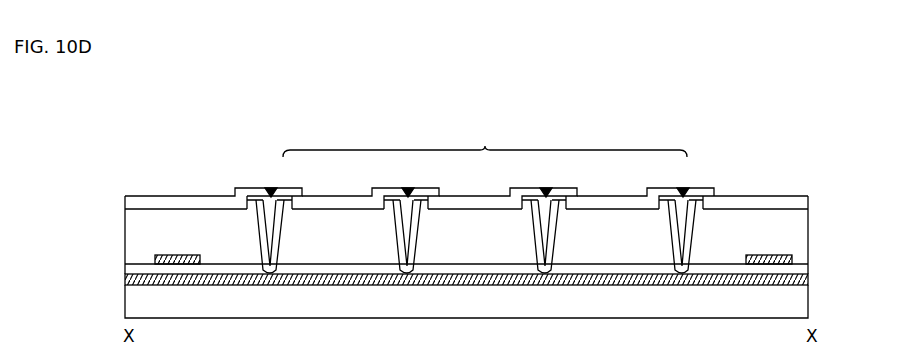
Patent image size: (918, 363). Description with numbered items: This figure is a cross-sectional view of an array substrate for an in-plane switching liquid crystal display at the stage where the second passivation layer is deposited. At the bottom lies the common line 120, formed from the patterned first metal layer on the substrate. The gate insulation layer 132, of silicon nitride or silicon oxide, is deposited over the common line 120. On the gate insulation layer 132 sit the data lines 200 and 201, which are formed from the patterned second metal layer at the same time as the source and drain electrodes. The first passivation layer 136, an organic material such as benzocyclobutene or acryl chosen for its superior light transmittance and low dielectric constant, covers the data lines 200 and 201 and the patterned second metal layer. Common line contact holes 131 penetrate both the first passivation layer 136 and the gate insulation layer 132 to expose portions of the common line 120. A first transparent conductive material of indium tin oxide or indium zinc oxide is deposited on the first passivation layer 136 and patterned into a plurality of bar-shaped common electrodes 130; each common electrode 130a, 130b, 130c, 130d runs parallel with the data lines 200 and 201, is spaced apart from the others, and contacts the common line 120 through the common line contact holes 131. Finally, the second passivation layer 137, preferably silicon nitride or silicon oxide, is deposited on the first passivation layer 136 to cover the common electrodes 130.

The common line 120 is at (565, 285).
The gate insulation layer 132 is at (638, 268).
The first passivation layer 136 is at (775, 222).
The second passivation layer 137 is at (208, 202).
The common electrodes 130 is at (485, 143).
The common electrode 130a is at (289, 196).
The common electrode 130b is at (426, 196).
The common electrode 130c is at (564, 196).
The common electrode 130d is at (676, 196).
The common line contact holes 131 is at (271, 188).
The data line 200 is at (187, 266).
The data line 201 is at (757, 266).